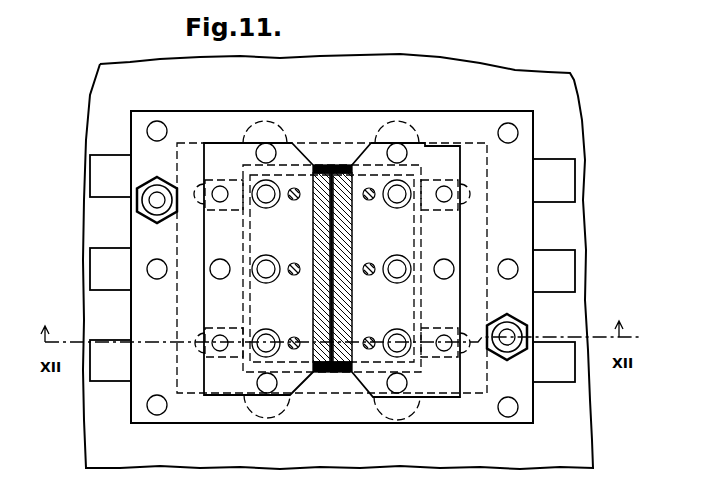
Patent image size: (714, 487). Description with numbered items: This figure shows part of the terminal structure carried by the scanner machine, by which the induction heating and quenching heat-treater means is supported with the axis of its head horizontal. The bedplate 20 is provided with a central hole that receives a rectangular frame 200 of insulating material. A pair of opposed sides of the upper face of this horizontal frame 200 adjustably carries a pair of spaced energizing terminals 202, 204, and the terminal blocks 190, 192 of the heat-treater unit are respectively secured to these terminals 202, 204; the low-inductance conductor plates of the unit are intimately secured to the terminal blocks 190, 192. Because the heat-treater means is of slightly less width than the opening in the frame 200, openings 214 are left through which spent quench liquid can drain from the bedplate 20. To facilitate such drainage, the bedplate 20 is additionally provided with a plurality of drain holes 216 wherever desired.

The bedplate 20 is at (574, 109).
The rectangular frame 200 is at (488, 114).
The drain holes 216 is at (100, 290).
The energizing terminal 202 is at (245, 393).
The energizing terminal 204 is at (438, 386).
The terminal block 190 is at (314, 166).
The terminal block 192 is at (342, 166).
The openings 214 is at (335, 168).